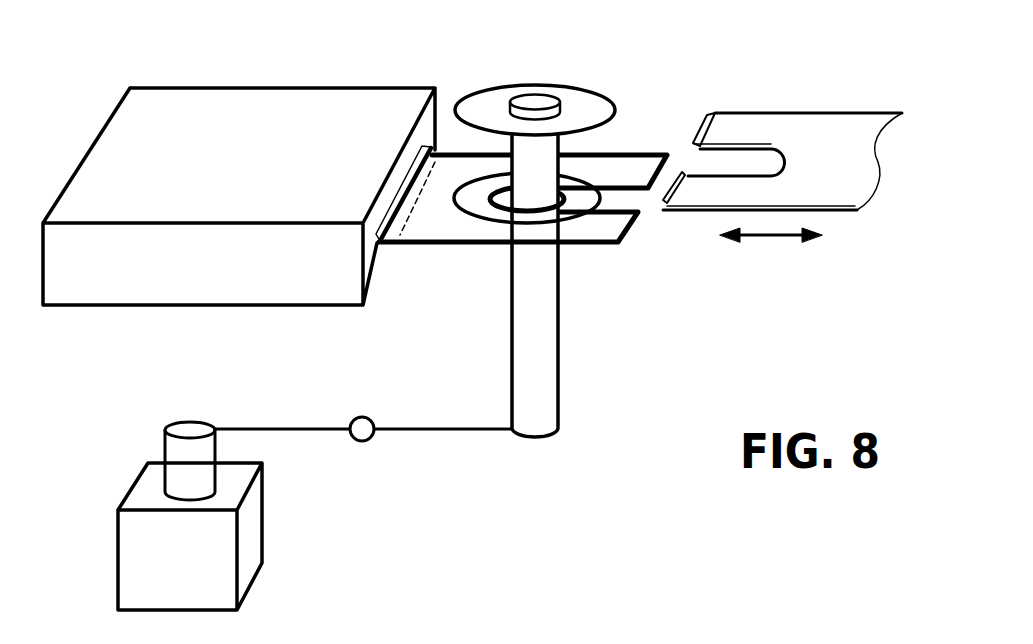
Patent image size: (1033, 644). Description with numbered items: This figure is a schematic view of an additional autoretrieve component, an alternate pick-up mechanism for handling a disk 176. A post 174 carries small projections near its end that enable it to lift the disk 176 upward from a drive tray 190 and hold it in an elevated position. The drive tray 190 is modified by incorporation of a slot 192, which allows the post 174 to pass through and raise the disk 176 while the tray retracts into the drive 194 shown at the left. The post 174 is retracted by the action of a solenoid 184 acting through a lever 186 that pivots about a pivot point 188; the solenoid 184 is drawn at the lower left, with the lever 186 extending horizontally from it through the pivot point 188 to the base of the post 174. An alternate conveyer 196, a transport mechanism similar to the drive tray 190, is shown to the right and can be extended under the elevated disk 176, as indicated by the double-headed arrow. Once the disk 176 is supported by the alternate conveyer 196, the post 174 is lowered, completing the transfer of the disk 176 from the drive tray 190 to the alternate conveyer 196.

The post 174 is at (558, 300).
The disk 176 is at (508, 85).
The solenoid 184 is at (263, 523).
The lever 186 is at (470, 431).
The pivot point 188 is at (370, 438).
The drive tray 190 is at (608, 168).
The slot 192 is at (603, 200).
The drive 194 is at (297, 87).
The alternate conveyer 196 is at (802, 113).